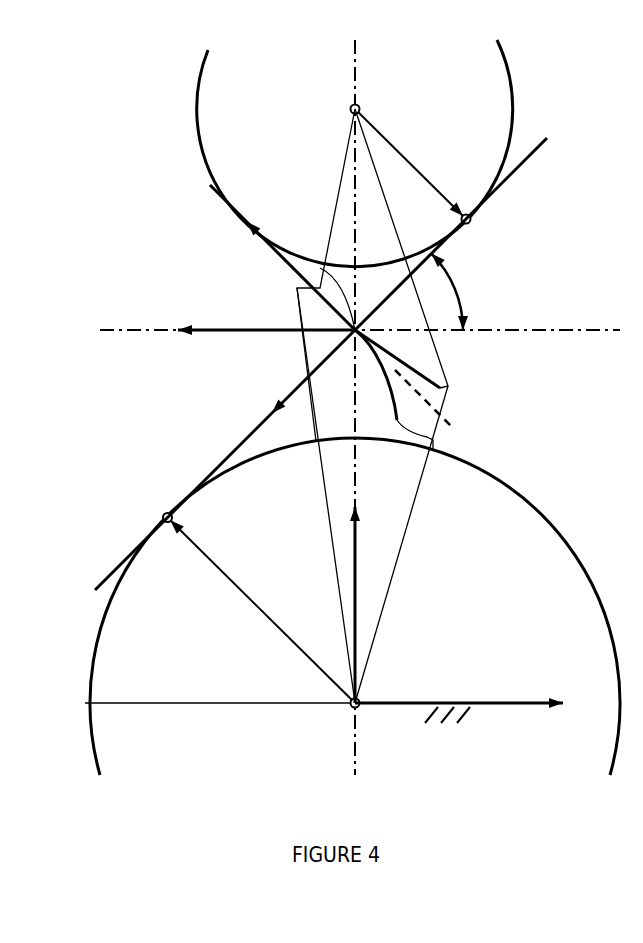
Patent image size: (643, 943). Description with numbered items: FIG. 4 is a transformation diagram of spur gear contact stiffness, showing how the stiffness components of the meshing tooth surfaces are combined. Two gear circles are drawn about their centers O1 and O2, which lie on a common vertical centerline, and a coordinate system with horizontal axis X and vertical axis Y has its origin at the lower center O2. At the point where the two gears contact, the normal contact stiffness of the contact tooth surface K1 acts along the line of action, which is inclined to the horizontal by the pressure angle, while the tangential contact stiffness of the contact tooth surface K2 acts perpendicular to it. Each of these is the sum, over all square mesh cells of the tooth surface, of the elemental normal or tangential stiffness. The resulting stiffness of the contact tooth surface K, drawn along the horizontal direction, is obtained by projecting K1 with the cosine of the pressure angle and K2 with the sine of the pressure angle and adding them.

The center of first gear (pinion) base circle O1 is at (355, 153).
The center of second gear base circle / coordinate origin O2 is at (355, 606).
The stiffness of contact tooth surface K is at (264, 318).
The normal contact stiffness of contact tooth surface K1 is at (321, 364).
The tangential contact stiffness of contact tooth surface K2 is at (330, 306).
The X coordinate axis X is at (459, 720).
The Y coordinate axis Y is at (365, 605).